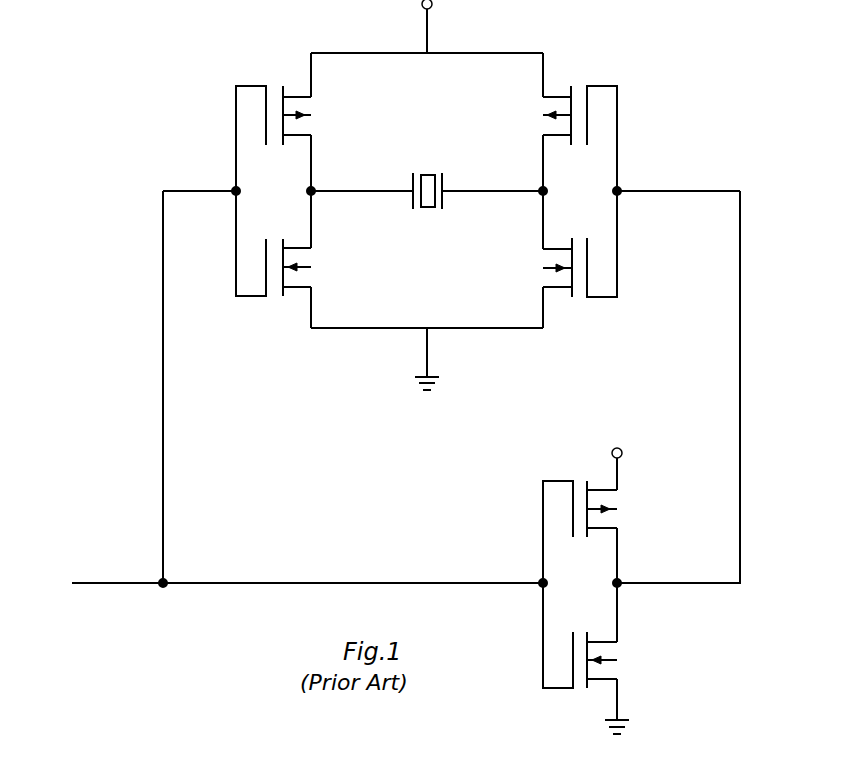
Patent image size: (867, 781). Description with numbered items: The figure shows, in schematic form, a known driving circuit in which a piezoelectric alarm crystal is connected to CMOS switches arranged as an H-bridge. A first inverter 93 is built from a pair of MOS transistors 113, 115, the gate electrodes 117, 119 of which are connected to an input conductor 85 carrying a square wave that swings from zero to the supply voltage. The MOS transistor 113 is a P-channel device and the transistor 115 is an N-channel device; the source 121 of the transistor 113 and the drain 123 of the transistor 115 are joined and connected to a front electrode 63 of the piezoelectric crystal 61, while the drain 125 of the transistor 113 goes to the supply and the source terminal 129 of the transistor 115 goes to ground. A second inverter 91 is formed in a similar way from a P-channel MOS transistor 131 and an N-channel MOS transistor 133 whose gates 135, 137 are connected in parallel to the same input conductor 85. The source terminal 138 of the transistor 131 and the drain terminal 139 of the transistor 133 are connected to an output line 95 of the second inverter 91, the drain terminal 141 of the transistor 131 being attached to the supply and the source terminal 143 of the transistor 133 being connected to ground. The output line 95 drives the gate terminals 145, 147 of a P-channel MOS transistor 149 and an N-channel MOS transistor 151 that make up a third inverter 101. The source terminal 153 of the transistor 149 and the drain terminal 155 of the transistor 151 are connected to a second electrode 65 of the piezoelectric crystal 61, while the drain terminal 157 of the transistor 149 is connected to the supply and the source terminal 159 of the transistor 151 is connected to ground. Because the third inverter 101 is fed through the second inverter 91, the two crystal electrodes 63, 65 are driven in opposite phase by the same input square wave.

The piezoelectric crystal 61 is at (429, 174).
The front electrode 63 is at (412, 186).
The second electrode 65 is at (444, 200).
The input conductor 85 is at (124, 586).
The second inverter 91 is at (533, 597).
The first inverter 93 is at (221, 182).
The output line 95 is at (740, 425).
The third inverter 101 is at (627, 184).
The MOS transistor 113 is at (316, 121).
The MOS transistor 115 is at (312, 270).
The gate electrode 117 is at (252, 86).
The gate electrode 119 is at (250, 297).
The source 121 is at (312, 158).
The drain 123 is at (312, 220).
The drain 125 is at (312, 72).
The source terminal 129 is at (312, 308).
The P-channel MOS transistor 131 is at (618, 517).
The N-channel MOS transistor 133 is at (618, 667).
The gate 135 is at (552, 481).
The gate 137 is at (555, 679).
The source terminal 138 is at (618, 553).
The drain terminal 139 is at (618, 630).
The drain terminal 141 is at (618, 472).
The source terminal 143 is at (618, 697).
The gate terminal 145 is at (604, 86).
The gate terminal 147 is at (603, 298).
The P-channel MOS transistor 149 is at (537, 111).
The N-channel MOS transistor 151 is at (542, 269).
The third transistor drain 153 is at (544, 170).
The drain terminal 155 is at (544, 213).
The drain terminal 157 is at (544, 62).
The source terminal 159 is at (544, 328).